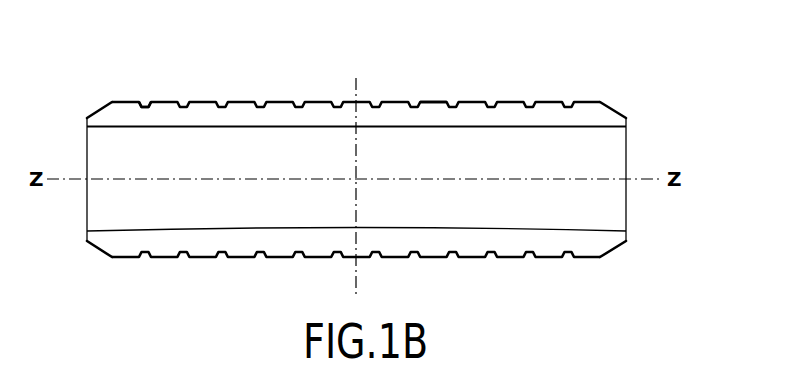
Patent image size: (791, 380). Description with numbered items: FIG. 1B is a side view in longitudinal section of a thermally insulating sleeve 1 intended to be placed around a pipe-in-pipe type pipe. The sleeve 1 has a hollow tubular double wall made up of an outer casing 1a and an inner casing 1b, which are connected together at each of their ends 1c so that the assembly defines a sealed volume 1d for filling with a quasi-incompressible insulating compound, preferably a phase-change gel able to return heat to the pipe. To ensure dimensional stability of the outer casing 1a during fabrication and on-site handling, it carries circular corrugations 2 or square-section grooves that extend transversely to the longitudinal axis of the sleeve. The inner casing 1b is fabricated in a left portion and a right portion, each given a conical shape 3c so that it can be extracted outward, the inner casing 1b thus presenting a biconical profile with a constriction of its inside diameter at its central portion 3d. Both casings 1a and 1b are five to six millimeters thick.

The thermally insulating sleeve 1 is at (539, 79).
The outer casing 1a is at (585, 102).
The inner casing 1b is at (607, 128).
The ends 1c is at (87, 119).
The sealed volume 1d is at (428, 110).
The circular corrugations 2 is at (145, 103).
The conical shape 3c is at (222, 230).
The central portion 3d is at (357, 227).